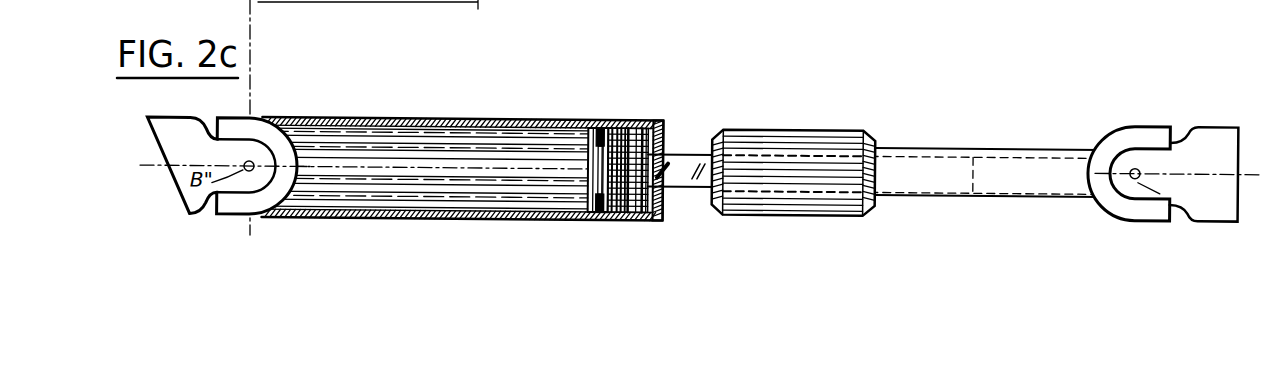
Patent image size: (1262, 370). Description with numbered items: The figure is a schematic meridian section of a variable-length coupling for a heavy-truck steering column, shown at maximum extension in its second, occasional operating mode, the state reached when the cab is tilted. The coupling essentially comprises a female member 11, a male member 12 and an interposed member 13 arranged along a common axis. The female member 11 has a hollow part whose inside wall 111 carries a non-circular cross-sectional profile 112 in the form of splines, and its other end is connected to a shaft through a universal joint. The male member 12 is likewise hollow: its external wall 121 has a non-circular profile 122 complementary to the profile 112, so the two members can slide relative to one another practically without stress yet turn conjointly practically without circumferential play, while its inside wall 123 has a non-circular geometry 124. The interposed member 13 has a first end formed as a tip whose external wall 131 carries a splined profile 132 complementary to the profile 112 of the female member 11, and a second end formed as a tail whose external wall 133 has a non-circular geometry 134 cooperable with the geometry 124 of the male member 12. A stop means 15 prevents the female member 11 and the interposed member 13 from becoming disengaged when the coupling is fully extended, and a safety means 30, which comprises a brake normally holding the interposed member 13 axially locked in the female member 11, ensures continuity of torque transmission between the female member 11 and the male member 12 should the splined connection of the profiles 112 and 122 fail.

The female member 11 is at (463, 151).
The inside wall 111 is at (435, 134).
The non-circular cross-sectional profile 112 is at (358, 152).
The male member 12 is at (986, 164).
The external wall 121 is at (776, 131).
The non-circular cross-sectional profile 122 is at (822, 148).
The inside wall 123 is at (1040, 161).
The non-circular cross-sectional geometry 124 is at (1003, 160).
The interposed member 13 is at (671, 136).
The external wall 131 is at (618, 125).
The non-circular cross-sectional profile 132 is at (633, 123).
The external wall 133 is at (905, 175).
The non-circular cross-sectional geometry 134 is at (693, 156).
The stop means 15 is at (647, 122).
The safety means 30 is at (594, 125).